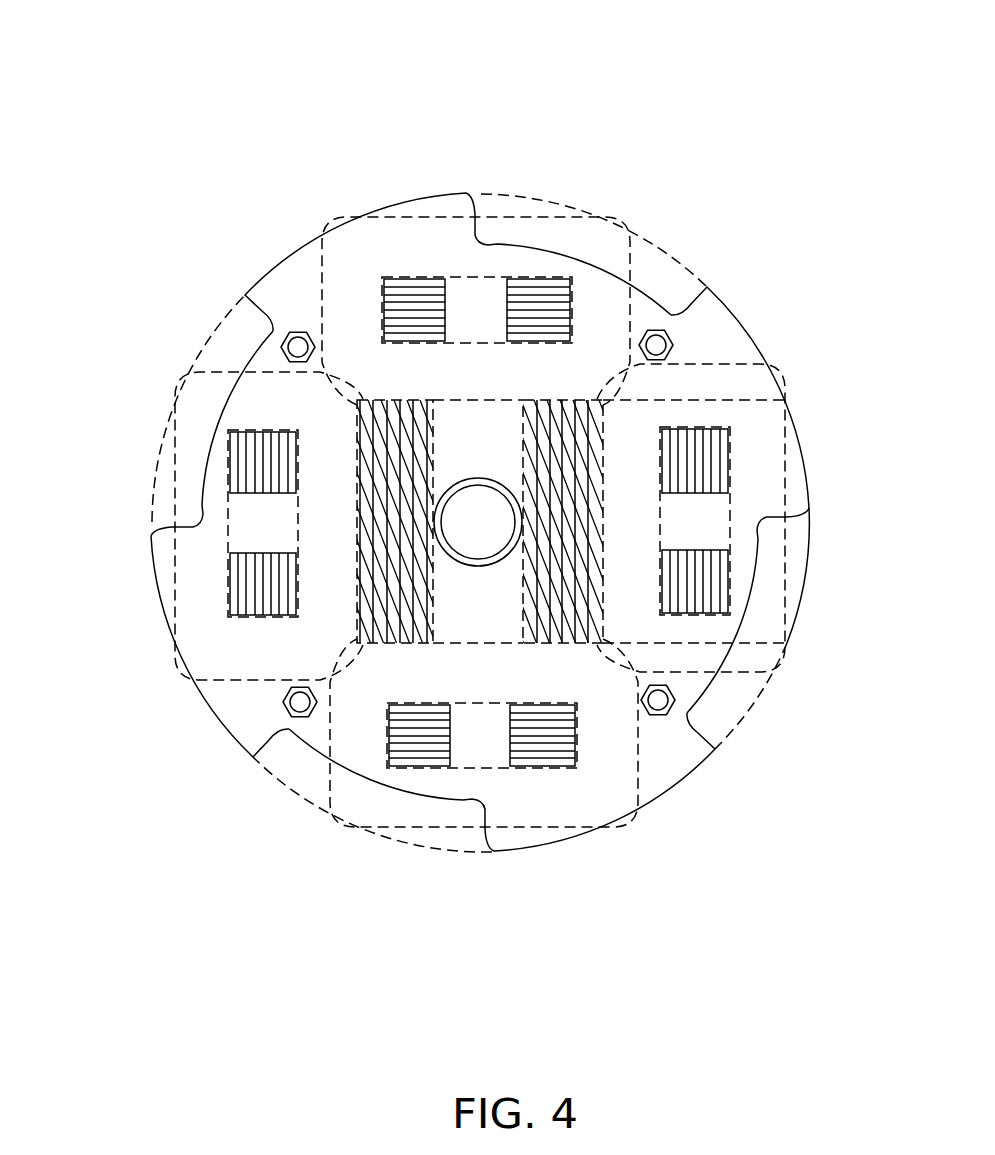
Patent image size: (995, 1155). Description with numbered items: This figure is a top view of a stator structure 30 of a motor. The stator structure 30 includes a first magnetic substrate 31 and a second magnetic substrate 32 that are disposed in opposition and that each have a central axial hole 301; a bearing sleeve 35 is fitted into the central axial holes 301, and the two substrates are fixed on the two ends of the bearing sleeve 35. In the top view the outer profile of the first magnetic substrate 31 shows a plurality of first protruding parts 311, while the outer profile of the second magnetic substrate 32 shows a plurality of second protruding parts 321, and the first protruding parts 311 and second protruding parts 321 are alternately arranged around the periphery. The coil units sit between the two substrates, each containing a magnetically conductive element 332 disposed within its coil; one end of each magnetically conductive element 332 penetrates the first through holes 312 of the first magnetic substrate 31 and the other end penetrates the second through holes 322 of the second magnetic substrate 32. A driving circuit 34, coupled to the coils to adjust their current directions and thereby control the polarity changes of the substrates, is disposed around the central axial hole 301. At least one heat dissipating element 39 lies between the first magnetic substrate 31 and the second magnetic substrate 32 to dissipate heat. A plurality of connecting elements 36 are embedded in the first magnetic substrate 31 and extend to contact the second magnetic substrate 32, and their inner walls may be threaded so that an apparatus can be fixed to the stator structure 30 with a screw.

The stator structure 30 is at (205, 104).
The first magnetic substrate 31 is at (710, 688).
The first protruding parts 311 is at (750, 360).
The first through holes 312 is at (413, 767).
The second magnetic substrate 32 is at (435, 247).
The second protruding parts 321 is at (634, 236).
The second through holes 322 is at (385, 742).
The driving circuit 34 is at (397, 400).
The magnetically conductive element 332 is at (404, 298).
The bearing sleeve 35 is at (480, 563).
The central axial hole 301 is at (478, 522).
The connecting elements 36 is at (298, 705).
The heat dissipating element 39 is at (365, 510).